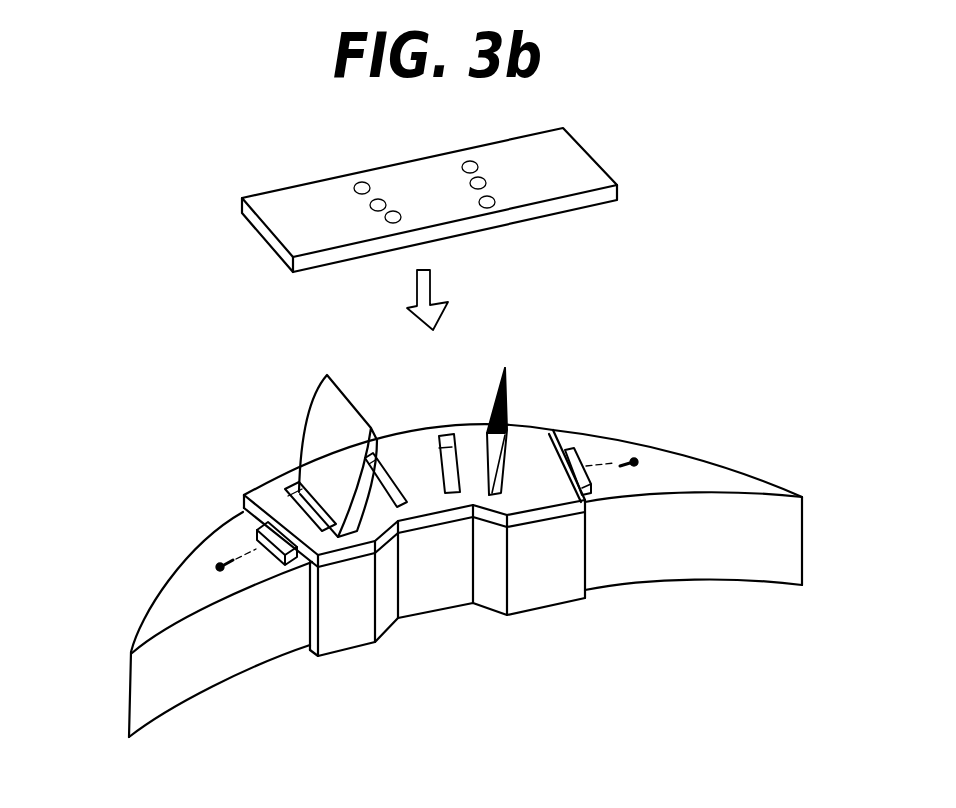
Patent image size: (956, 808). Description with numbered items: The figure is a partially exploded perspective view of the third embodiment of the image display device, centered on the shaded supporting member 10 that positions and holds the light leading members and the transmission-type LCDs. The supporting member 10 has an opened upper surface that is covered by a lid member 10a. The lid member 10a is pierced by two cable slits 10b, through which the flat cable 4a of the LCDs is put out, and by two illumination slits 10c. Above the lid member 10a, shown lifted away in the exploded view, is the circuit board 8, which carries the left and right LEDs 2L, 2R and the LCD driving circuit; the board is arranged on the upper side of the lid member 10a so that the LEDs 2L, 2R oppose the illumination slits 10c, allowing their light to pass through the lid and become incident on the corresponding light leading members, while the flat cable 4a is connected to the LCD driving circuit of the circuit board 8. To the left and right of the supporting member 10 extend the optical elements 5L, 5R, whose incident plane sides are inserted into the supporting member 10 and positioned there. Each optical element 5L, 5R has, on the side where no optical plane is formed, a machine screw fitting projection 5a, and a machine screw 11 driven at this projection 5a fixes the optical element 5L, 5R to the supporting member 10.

The circuit board 8 is at (273, 222).
The left LED 2L is at (362, 194).
The right LED 2R is at (477, 172).
The supporting member 10 is at (432, 593).
The lid member 10a is at (532, 500).
The cable slit 10b is at (478, 430).
The illumination slit 10c is at (387, 455).
The flat cable 4a is at (310, 438).
The machine screw fitting projection 5a is at (260, 540).
The machine screw 11 is at (263, 548).
The left optical element 5L is at (150, 604).
The right optical element 5R is at (737, 465).